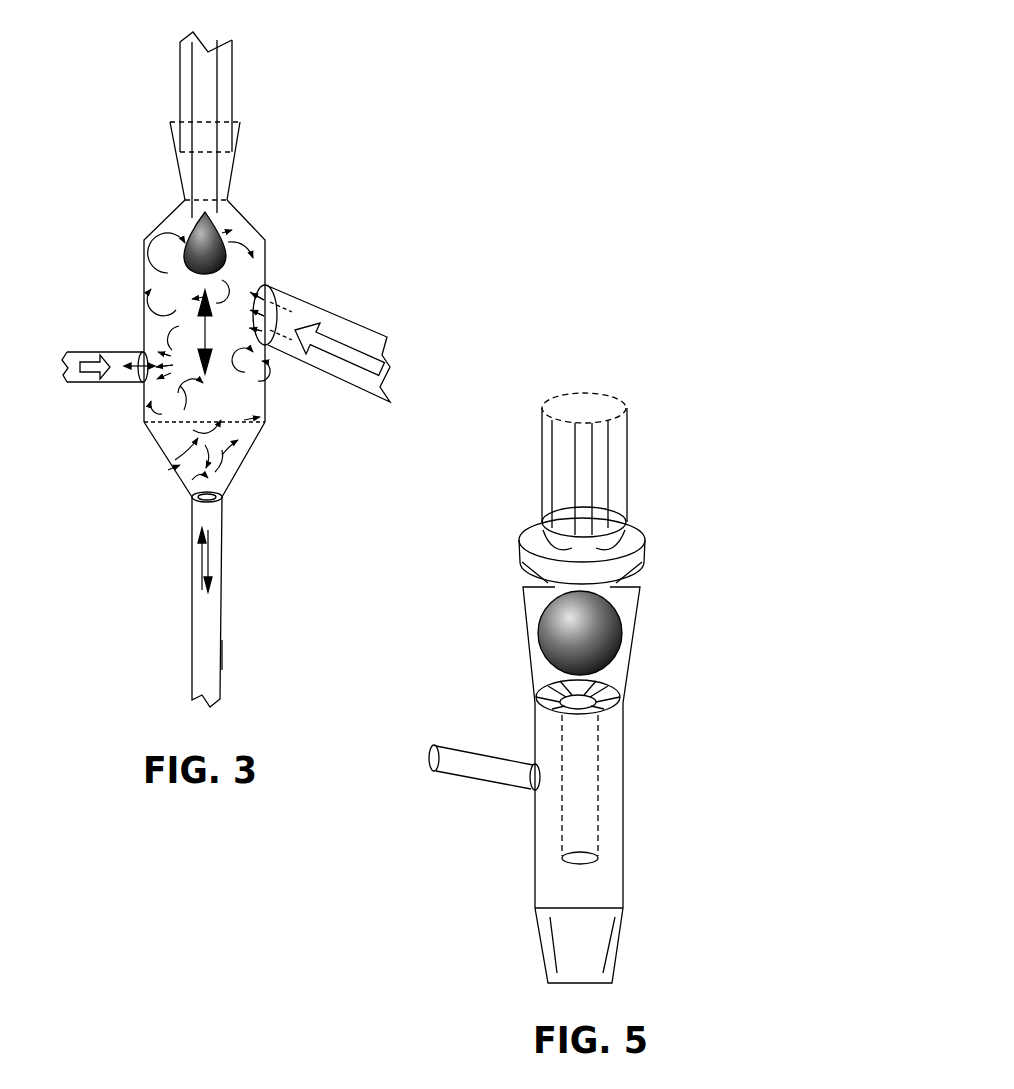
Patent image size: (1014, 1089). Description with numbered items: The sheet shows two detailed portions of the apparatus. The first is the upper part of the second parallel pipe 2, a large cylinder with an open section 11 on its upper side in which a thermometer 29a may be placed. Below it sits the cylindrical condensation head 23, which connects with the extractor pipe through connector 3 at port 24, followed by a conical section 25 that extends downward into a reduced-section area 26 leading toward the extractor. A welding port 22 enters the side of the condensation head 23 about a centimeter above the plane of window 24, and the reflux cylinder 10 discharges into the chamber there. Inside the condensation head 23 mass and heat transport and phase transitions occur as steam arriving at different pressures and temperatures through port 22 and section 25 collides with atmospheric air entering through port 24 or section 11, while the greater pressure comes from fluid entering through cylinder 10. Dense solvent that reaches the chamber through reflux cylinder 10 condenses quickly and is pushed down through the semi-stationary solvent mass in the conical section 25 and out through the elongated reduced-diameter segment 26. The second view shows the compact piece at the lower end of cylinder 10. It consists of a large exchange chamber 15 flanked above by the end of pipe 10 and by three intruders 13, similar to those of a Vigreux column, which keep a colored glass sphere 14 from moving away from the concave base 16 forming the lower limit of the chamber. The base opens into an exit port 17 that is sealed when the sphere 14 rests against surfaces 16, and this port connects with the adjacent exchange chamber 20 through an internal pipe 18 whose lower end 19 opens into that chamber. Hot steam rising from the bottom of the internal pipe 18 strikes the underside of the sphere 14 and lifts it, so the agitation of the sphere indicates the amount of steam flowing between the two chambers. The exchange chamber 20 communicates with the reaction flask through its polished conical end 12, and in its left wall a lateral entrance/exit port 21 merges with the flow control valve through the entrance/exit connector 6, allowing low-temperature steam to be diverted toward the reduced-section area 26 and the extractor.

In FIG. 3, the second parallel pipe 2 is at (221, 655).
In FIG. 3, the connector 3 is at (80, 352).
In FIG. 5, the entrance/exit connector 6 is at (480, 752).
In FIG. 3, the reflux cylinder 10 is at (388, 333).
In FIG. 5, the reflux cylinder 10 is at (628, 448).
In FIG. 3, the open section 11 is at (232, 135).
In FIG. 5, the polished conical end 12 is at (545, 957).
In FIG. 5, the intruders 13 is at (537, 583).
In FIG. 5, the glass sphere 14 is at (570, 633).
In FIG. 5, the exchange chamber 15 is at (623, 600).
In FIG. 5, the concave base 16 is at (621, 690).
In FIG. 5, the exit port 17 is at (546, 700).
In FIG. 5, the internal pipe 18 is at (580, 773).
In FIG. 5, the lower end 19 is at (584, 860).
In FIG. 5, the exchange chamber 20 is at (565, 888).
In FIG. 5, the lateral port 21 is at (533, 786).
In FIG. 3, the welding port 22 is at (297, 300).
In FIG. 3, the cylindrical condensation head 23 is at (158, 292).
In FIG. 3, the port 24 is at (140, 372).
In FIG. 3, the conical section 25 is at (250, 448).
In FIG. 3, the reduced-section area 26 is at (200, 603).
In FIG. 3, the thermometer 29a is at (190, 219).